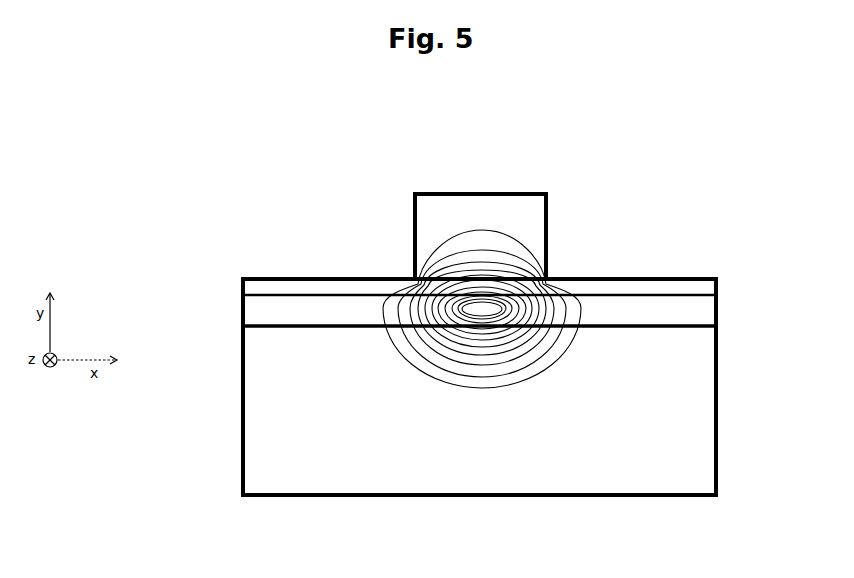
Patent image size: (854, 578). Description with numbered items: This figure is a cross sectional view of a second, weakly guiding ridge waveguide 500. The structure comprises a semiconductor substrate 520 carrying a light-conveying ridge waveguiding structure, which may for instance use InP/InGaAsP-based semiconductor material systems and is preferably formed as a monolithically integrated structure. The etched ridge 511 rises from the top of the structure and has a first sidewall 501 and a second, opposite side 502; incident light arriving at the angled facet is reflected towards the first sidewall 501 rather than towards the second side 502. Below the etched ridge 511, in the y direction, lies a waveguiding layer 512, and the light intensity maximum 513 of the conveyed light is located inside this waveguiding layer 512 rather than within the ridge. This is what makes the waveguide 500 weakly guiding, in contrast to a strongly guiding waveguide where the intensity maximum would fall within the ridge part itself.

The waveguide 500 is at (377, 168).
The first sidewall 501 is at (415, 233).
The second side 502 is at (548, 230).
The etched ridge 511 is at (480, 236).
The waveguiding layer 512 is at (718, 312).
The light intensity maximum 513 is at (484, 310).
The semiconductor substrate 520 is at (479, 387).